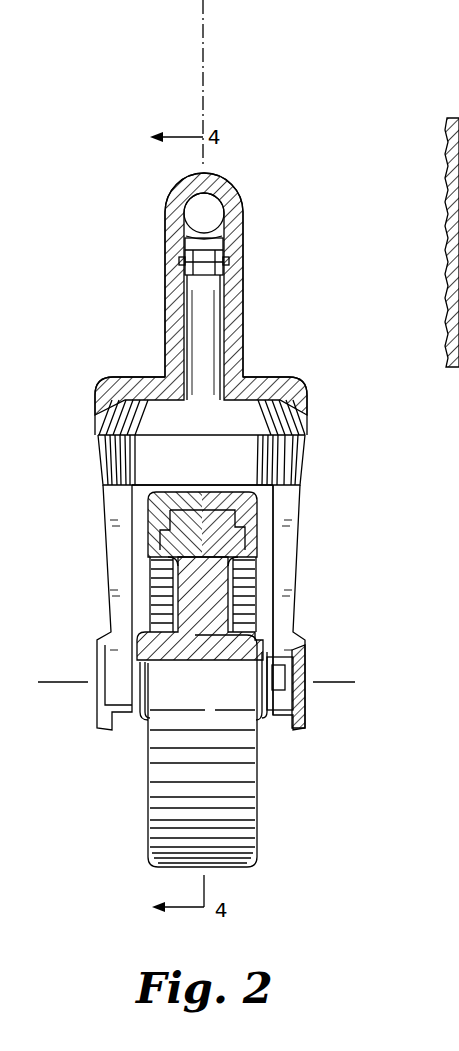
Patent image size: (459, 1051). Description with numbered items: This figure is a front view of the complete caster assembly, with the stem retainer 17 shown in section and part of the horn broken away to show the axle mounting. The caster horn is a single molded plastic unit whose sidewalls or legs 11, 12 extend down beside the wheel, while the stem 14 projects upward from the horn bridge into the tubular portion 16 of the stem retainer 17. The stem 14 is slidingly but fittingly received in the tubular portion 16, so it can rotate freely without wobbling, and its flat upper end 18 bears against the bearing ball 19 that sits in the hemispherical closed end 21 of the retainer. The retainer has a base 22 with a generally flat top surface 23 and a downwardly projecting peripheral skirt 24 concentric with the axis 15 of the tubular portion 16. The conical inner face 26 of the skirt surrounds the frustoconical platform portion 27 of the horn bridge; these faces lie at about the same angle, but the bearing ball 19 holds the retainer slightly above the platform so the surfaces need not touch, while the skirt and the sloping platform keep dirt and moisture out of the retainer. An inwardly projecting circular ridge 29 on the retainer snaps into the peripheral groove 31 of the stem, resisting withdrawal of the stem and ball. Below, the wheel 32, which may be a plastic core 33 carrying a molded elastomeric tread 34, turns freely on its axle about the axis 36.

The horn sidewall 11 is at (282, 523).
The horn sidewall 12 is at (122, 530).
The stem 14 is at (195, 340).
The axis 15 is at (202, 48).
The tubular portion 16 is at (238, 300).
The stem retainer 17 is at (146, 274).
The flat upper end 18 is at (213, 233).
The bearing ball 19 is at (190, 219).
The hemispherical closed end 21 is at (192, 206).
The base 22 is at (266, 384).
The flat top surface 23 is at (137, 385).
The peripheral skirt 24 is at (308, 414).
The conical inner face 26 is at (110, 408).
The frustoconical platform portion 27 is at (285, 423).
The circular ridge 29 is at (226, 264).
The peripheral groove 31 is at (208, 262).
The wheel 32 is at (290, 830).
The core 33 is at (228, 583).
The tread 34 is at (245, 497).
The axis 36 is at (355, 682).